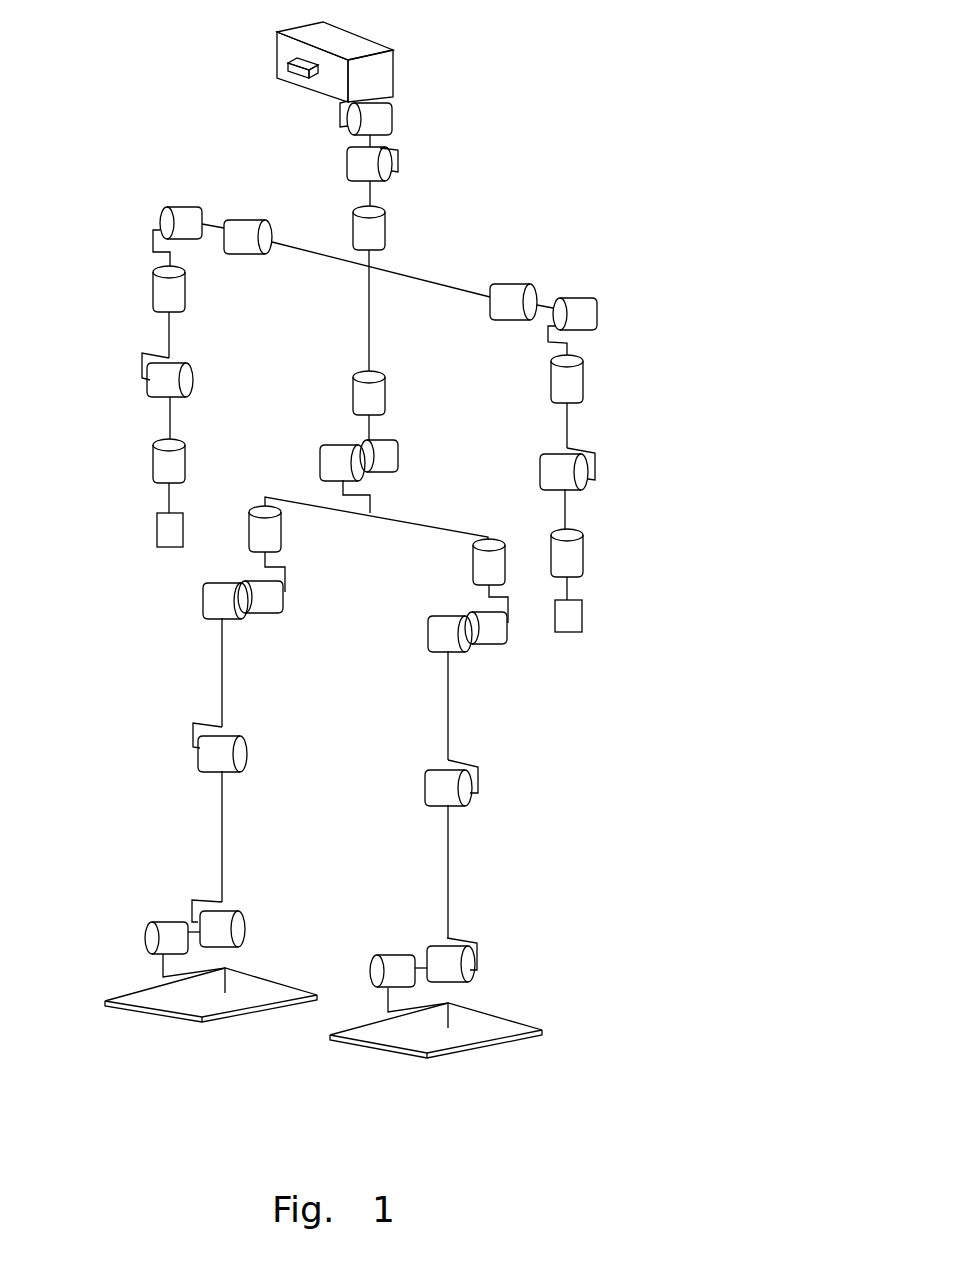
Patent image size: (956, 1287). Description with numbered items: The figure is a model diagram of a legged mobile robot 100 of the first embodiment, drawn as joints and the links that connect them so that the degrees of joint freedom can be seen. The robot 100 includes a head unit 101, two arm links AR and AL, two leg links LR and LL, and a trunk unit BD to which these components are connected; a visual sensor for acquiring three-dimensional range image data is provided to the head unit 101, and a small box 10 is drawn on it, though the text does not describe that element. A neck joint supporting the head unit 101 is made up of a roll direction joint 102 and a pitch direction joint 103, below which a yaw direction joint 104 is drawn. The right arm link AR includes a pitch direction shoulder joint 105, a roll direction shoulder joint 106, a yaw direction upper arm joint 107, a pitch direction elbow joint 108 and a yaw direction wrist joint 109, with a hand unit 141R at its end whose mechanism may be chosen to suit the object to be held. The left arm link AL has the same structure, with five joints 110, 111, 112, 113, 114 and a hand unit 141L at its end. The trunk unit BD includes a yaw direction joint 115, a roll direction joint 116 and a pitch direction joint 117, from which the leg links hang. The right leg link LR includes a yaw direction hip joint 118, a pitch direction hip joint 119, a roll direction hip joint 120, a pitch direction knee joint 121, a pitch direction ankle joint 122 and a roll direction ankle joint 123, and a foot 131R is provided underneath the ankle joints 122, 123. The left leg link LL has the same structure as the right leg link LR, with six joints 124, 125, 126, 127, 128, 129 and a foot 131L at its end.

The robot 100 is at (622, 70).
The control device 10 is at (277, 64).
The head unit 101 is at (365, 33).
The roll direction joint 102 is at (392, 115).
The pitch direction joint 103 is at (347, 163).
The yaw joint 104 is at (385, 213).
The pitch direction shoulder joint 105 is at (257, 205).
The roll direction shoulder joint 106 is at (186, 208).
The yaw direction upper arm joint 107 is at (153, 291).
The pitch direction elbow joint 108 is at (193, 380).
The yaw direction wrist joint 109 is at (153, 465).
The hand unit 141R is at (157, 530).
The joint 110 is at (522, 290).
The joint 111 is at (588, 298).
The joint 112 is at (583, 373).
The joint 113 is at (540, 463).
The joint 114 is at (583, 548).
The hand unit 141L is at (582, 608).
The yaw direction joint 115 is at (353, 390).
The roll direction joint 116 is at (390, 438).
The pitch direction joint 117 is at (320, 460).
The yaw direction hip joint 118 is at (281, 545).
The pitch direction hip joint 119 is at (203, 600).
The roll direction hip joint 120 is at (273, 614).
The pitch direction knee joint 121 is at (247, 758).
The pitch direction ankle joint 122 is at (245, 938).
The roll direction ankle joint 123 is at (160, 922).
The foot 131R is at (228, 1022).
The joint 124 is at (473, 570).
The joint 125 is at (428, 622).
The joint 126 is at (505, 648).
The joint 127 is at (470, 794).
The joint 128 is at (475, 968).
The joint 129 is at (393, 953).
The foot 131L is at (470, 1048).
The right arm link AR is at (95, 370).
The left arm link AL is at (648, 455).
The trunk unit BD is at (420, 349).
The right leg link LR is at (165, 714).
The left leg link LL is at (537, 757).